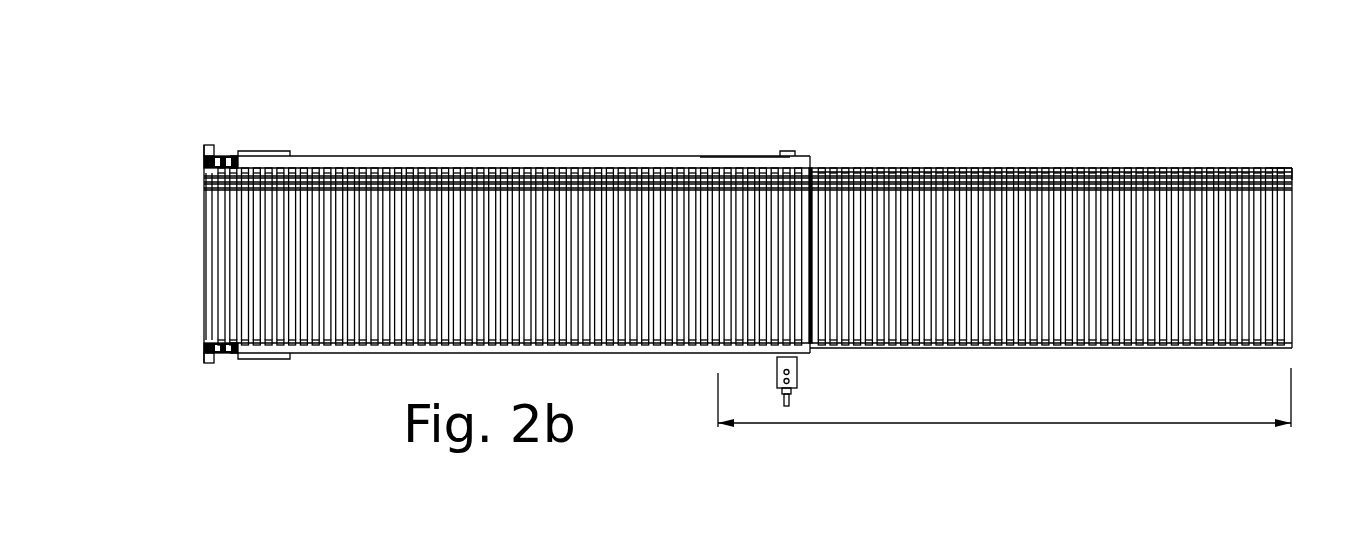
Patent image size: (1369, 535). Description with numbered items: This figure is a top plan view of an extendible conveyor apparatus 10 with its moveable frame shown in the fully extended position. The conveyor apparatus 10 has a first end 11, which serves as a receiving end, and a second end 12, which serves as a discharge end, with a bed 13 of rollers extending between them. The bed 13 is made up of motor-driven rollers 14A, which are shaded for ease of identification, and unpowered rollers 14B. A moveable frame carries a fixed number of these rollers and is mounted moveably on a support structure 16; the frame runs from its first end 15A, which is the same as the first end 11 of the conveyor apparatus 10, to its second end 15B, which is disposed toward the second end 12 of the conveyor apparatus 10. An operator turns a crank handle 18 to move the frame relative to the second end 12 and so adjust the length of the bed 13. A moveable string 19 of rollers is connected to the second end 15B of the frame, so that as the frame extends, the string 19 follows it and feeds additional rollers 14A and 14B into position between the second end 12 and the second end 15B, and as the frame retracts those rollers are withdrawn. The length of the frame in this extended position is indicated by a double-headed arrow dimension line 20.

The extendible conveyor apparatus 10 is at (1080, 108).
The first end 11 is at (1273, 223).
The second end 12 is at (205, 228).
The bed of rollers 13 is at (444, 222).
The motor-driven roller 14A is at (818, 198).
The unpowered roller 14B is at (930, 200).
The first end of the frame 15A is at (1293, 168).
The second end of the frame 15B is at (742, 170).
The support structure 16 is at (597, 353).
The crank handle 18 is at (790, 400).
The string of rollers 19 is at (358, 302).
The dimension line 20 is at (968, 423).